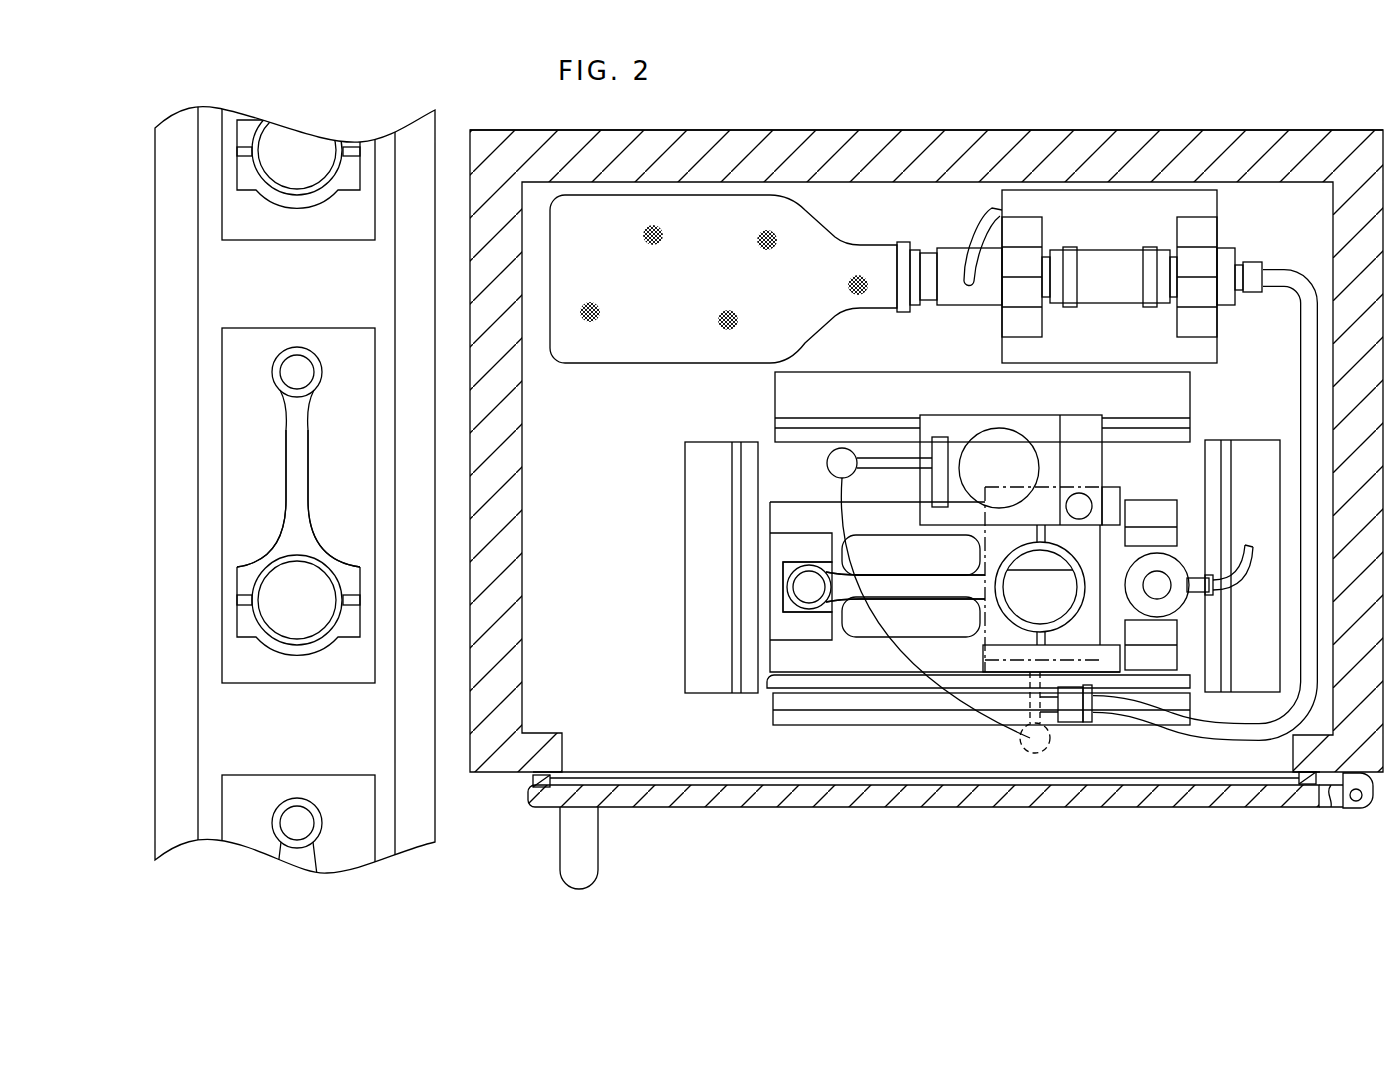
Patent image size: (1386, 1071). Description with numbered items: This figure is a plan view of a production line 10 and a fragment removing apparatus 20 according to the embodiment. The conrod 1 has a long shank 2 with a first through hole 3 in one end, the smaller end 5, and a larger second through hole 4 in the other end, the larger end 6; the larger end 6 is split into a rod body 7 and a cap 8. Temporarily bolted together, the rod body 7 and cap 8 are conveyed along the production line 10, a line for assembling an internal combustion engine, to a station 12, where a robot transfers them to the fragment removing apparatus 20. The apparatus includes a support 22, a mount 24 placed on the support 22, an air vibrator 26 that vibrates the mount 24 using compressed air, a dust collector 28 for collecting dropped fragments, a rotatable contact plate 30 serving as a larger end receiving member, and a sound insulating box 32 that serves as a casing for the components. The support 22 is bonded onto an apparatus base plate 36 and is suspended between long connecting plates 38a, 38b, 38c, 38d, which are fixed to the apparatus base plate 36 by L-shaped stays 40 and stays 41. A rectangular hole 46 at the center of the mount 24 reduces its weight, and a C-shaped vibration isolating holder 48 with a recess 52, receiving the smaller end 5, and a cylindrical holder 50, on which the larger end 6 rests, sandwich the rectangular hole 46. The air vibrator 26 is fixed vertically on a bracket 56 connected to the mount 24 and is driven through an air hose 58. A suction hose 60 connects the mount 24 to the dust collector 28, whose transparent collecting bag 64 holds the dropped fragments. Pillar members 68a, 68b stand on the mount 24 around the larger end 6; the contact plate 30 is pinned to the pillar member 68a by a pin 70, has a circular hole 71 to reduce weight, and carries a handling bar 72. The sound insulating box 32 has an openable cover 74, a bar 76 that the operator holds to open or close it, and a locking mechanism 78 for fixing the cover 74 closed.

The conrod 1 is at (270, 434).
The shank 2 is at (304, 483).
The first through hole 3 is at (319, 380).
The second through hole 4 is at (336, 558).
The smaller end 5 is at (292, 360).
The larger end 6 is at (303, 633).
The rod body 7 is at (270, 532).
The cap 8 is at (349, 634).
The production line 10 is at (427, 146).
The station 12 is at (836, 127).
The fragment removing apparatus 20 is at (1186, 84).
The support 22 is at (941, 554).
The mount 24 is at (776, 668).
The air vibrator 26 is at (1178, 597).
The dust collector 28 is at (1233, 241).
The contact plate 30 is at (1040, 430).
The sound insulating box 32 is at (962, 140).
The apparatus base plate 36 is at (752, 774).
The connecting plate 38a is at (737, 495).
The connecting plate 38b is at (1216, 447).
The connecting plate 38c is at (897, 727).
The connecting plate 38d is at (776, 432).
The L-shaped stay 40 is at (840, 385).
The stay 41 is at (800, 715).
The rectangular hole 46 is at (862, 630).
The vibration isolating holder 48 is at (803, 543).
The holder 50 is at (1002, 595).
The recess 52 is at (787, 578).
The bracket 56 is at (1172, 540).
The air hose 58 is at (1243, 590).
The suction hose 60 is at (1178, 727).
The collecting bag 64 is at (600, 345).
The pillar member 68a is at (1108, 487).
The pillar member 68b is at (1105, 665).
The pin 70 is at (1082, 494).
The circular hole 71 is at (972, 455).
The handling bar 72 is at (890, 460).
The cover 74 is at (955, 809).
The bar 76 is at (583, 865).
The locking mechanism 78 is at (535, 779).